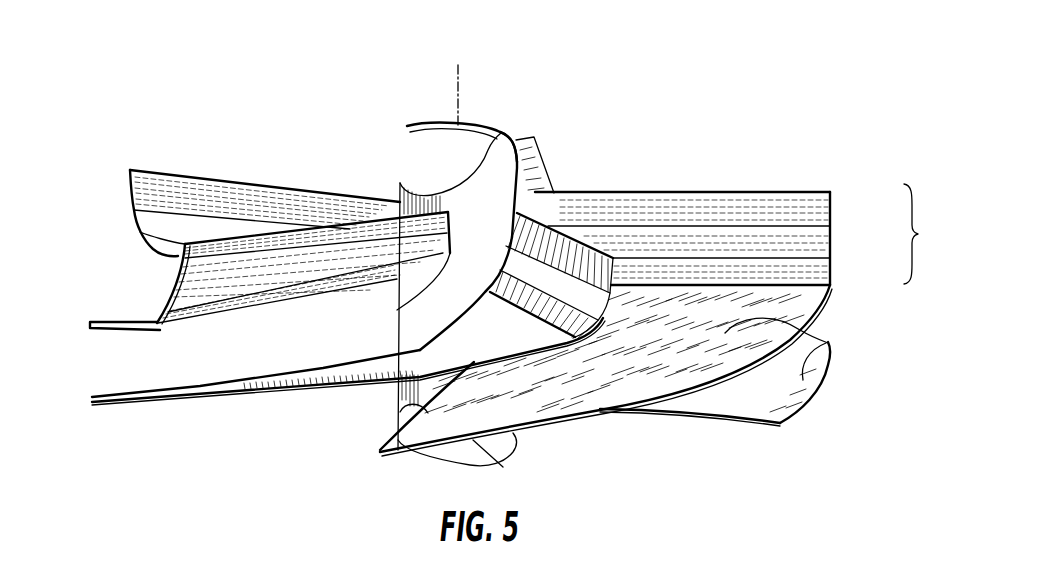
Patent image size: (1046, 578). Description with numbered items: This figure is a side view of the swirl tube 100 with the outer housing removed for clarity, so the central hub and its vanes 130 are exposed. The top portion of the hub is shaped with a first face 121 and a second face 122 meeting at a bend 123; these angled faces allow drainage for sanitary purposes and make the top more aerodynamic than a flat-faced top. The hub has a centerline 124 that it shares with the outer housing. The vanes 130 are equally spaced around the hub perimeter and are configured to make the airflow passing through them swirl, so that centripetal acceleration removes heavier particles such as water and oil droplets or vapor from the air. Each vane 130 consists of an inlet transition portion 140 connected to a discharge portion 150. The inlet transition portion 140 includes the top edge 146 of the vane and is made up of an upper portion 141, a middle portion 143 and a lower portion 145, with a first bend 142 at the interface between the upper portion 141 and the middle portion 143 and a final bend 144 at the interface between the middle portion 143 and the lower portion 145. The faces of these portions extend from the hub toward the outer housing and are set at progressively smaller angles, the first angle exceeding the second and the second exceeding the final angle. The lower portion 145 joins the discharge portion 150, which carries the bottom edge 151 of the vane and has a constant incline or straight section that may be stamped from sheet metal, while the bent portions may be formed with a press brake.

The swirl tube 100 is at (220, 74).
The first face 121 is at (410, 172).
The second face 122 is at (497, 134).
The bend 123 is at (417, 126).
The centerline 124 is at (455, 82).
The vane 130 is at (125, 313).
The inlet transition portion 140 is at (932, 234).
The upper portion 141 is at (133, 181).
The first bend 142 is at (134, 206).
The middle portion 143 is at (140, 229).
The final bend 144 is at (143, 233).
The lower portion 145 is at (167, 252).
The top edge 146 is at (185, 175).
The discharge portion 150 is at (320, 368).
The bottom edge 151 is at (380, 447).